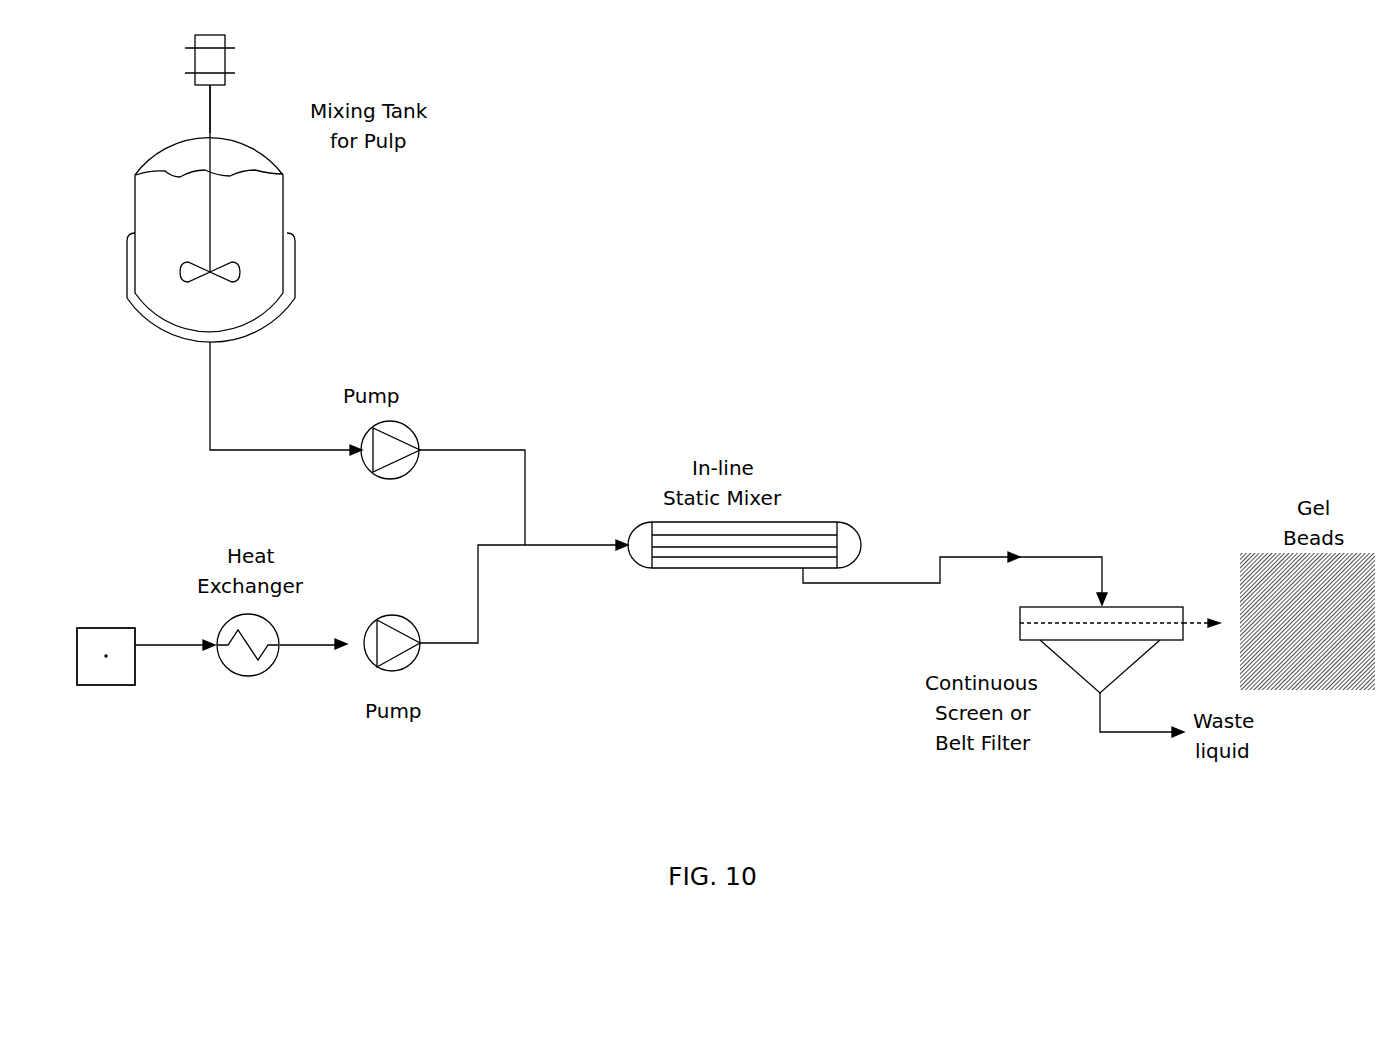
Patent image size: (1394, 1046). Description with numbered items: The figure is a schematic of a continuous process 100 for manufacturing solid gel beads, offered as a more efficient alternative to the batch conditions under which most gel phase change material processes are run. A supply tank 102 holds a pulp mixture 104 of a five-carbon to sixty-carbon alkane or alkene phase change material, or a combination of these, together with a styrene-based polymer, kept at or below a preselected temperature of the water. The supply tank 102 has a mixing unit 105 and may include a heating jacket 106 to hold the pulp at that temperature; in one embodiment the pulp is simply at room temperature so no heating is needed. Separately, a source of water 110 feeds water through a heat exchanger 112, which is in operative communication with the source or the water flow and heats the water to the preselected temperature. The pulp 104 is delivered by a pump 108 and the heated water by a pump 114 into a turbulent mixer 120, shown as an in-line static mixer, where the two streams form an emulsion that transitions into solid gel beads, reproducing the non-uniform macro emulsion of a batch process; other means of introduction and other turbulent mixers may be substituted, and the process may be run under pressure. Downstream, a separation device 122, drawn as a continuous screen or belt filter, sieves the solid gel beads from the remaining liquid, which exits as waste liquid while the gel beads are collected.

The continuous gel bead production system 100 is at (795, 146).
The supply tank 102 is at (283, 183).
The pulp mixture 104 is at (170, 168).
The mixing unit 105 is at (205, 245).
The heating jacket 106 is at (297, 258).
The pump 108 is at (412, 432).
The source of water 110 is at (82, 629).
The heat exchanger 112 is at (272, 665).
The pump 114 is at (420, 660).
The turbulent mixer 120 is at (808, 520).
The separation device 122 is at (1155, 605).